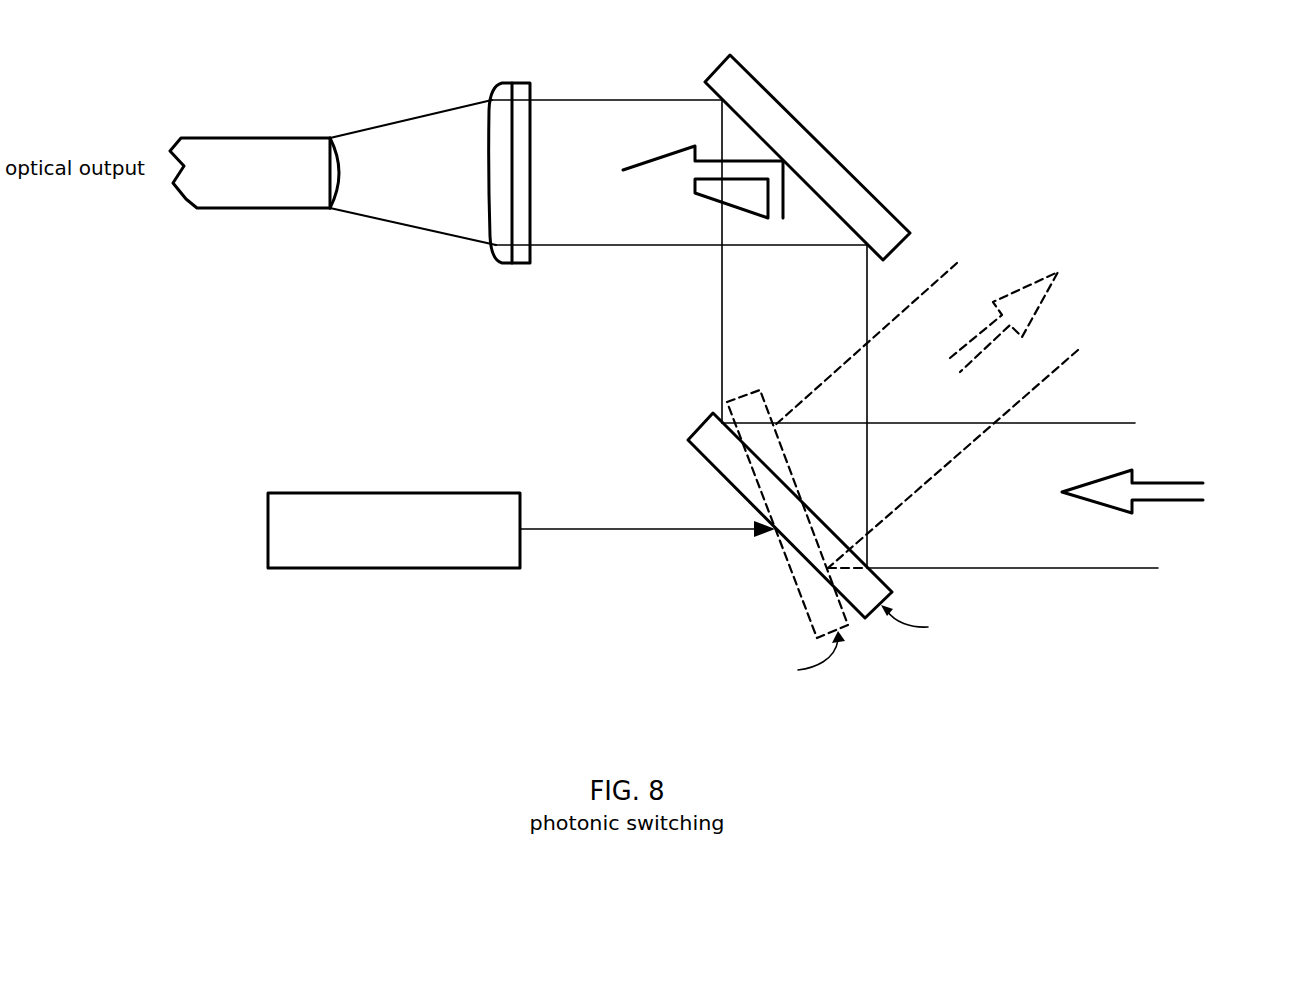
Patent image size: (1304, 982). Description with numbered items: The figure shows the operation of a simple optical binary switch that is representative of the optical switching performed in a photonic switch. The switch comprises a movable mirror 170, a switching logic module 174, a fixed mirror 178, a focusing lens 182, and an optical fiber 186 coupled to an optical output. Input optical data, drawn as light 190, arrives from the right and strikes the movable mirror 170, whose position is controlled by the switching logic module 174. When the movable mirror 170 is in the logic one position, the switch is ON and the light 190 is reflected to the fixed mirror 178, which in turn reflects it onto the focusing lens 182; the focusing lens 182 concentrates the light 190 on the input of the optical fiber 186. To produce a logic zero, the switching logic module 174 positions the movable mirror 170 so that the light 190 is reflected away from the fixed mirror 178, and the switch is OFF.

The movable mirror 170 is at (703, 422).
The switching logic module 174 is at (521, 530).
The fixed mirror 178 is at (788, 108).
The focusing lens 182 is at (558, 52).
The optical fiber 186 is at (268, 106).
The light 190 is at (1181, 491).